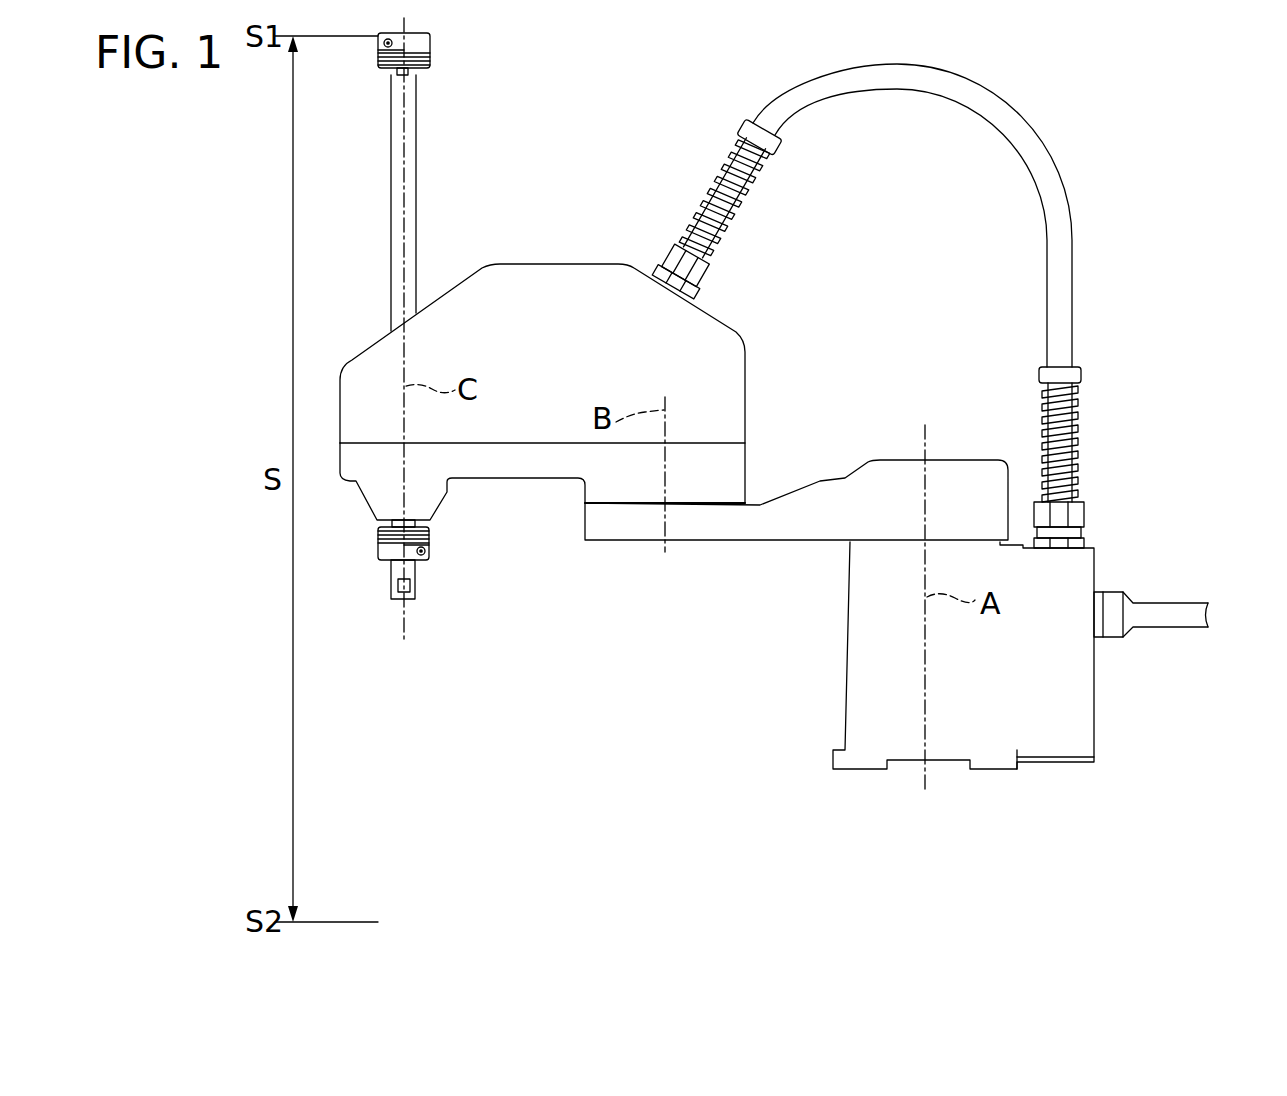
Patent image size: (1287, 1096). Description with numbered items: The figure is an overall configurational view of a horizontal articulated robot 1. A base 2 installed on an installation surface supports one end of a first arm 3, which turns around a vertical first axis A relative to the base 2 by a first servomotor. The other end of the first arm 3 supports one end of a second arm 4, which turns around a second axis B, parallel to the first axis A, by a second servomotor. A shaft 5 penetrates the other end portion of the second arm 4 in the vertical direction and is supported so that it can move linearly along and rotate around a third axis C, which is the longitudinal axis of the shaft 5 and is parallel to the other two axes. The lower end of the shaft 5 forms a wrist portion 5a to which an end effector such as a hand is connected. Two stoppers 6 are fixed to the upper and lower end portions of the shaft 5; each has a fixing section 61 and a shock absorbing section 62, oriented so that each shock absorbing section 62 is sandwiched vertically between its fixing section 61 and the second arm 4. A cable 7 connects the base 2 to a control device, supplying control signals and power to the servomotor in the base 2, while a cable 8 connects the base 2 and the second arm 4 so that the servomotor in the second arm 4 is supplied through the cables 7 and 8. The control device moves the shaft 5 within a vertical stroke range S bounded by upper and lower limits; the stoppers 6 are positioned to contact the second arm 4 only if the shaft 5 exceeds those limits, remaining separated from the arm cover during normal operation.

The horizontal articulated robot 1 is at (1146, 104).
The base 2 is at (1100, 706).
The first arm 3 is at (961, 452).
The second arm 4 is at (752, 455).
The shaft 5 is at (436, 377).
The wrist portion 5a is at (411, 601).
The stopper 6 is at (468, 319).
The fixing section 61 is at (431, 40).
The shock absorbing section 62 is at (431, 58).
The cable 7 is at (1165, 600).
The cable 8 is at (918, 90).